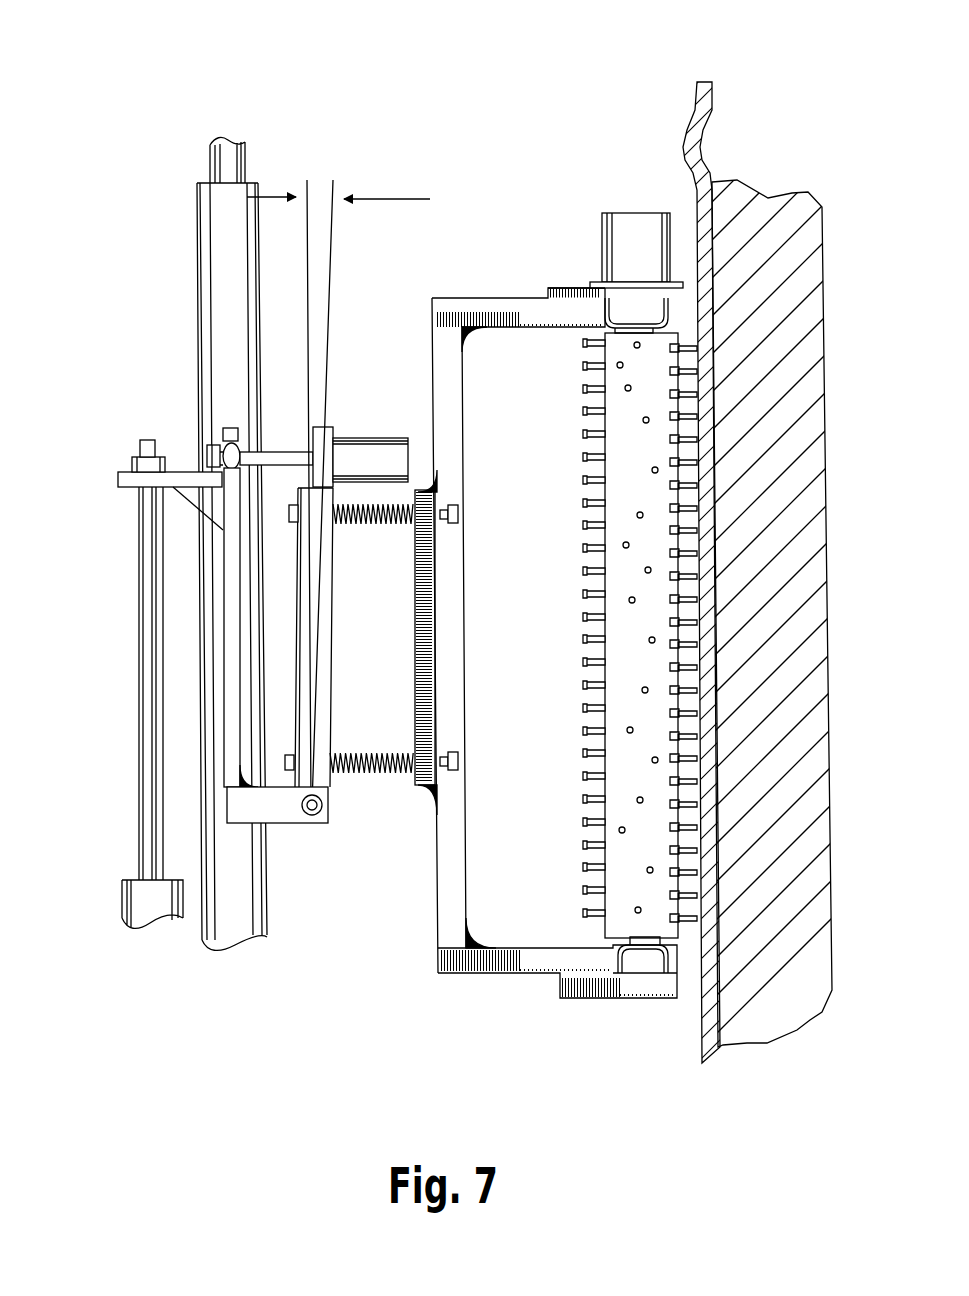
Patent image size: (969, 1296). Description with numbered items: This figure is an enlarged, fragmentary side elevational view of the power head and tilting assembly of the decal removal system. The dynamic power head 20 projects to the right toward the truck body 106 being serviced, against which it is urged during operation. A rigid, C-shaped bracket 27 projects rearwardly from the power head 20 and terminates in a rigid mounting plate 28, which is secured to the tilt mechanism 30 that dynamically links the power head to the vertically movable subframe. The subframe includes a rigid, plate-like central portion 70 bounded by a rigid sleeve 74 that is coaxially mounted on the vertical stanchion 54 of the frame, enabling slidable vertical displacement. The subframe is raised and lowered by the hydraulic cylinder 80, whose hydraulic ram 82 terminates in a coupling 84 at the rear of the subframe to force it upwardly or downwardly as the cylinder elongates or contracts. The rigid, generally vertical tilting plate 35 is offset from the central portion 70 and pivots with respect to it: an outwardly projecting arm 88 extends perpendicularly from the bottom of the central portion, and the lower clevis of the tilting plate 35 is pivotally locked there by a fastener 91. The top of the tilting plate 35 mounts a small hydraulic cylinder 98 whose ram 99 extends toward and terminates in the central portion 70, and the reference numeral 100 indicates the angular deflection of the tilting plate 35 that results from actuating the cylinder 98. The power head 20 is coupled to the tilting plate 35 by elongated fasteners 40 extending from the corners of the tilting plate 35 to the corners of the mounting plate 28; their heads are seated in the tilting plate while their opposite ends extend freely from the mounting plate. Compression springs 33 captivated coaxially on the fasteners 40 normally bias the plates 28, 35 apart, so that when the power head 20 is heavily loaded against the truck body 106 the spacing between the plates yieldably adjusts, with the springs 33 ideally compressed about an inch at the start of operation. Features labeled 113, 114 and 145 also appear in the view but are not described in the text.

The power head 20 is at (634, 196).
The C-shaped bracket 27 is at (477, 305).
The mounting plate 28 is at (417, 693).
The tilt mechanism 30 is at (351, 410).
The springs 33 is at (345, 525).
The tilting plate 35 is at (337, 641).
The fasteners 40 is at (458, 506).
The stanchion 54 is at (210, 153).
The central portion 70 is at (228, 430).
The sleeve 74 is at (198, 320).
The hydraulic cylinder 80 is at (122, 900).
The hydraulic ram 82 is at (135, 720).
The coupling 84 is at (132, 472).
The arm 88 is at (272, 813).
The fastener 91 is at (316, 818).
The hydraulic cylinder 98 is at (393, 458).
The ram 99 is at (283, 448).
The angular deflection 100 is at (320, 195).
The truck body 106 is at (780, 218).
The lower mounting step 113 is at (650, 1000).
The mounting flange 114 is at (573, 290).
The wall panel 145 is at (712, 85).